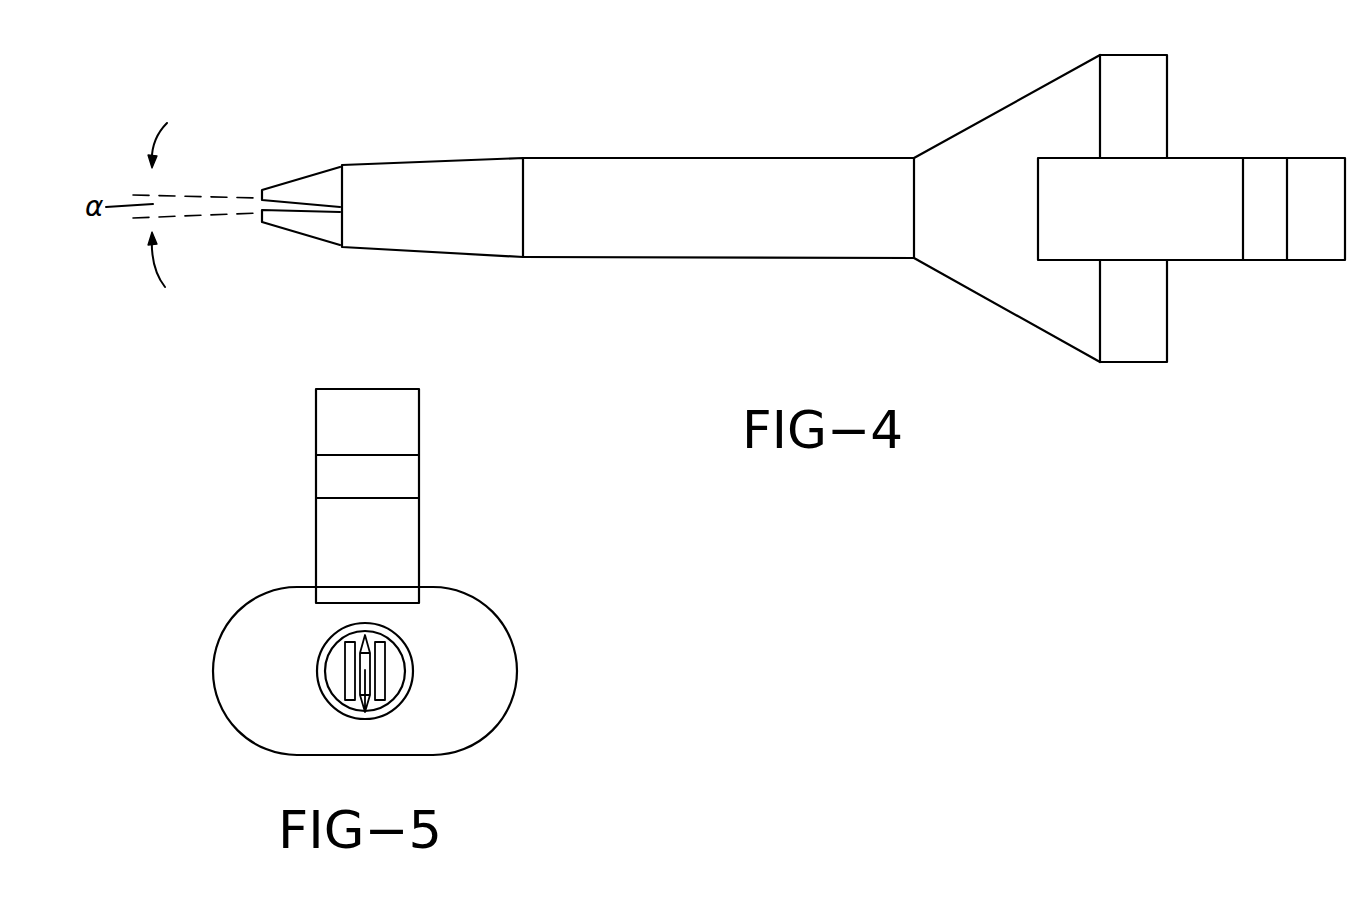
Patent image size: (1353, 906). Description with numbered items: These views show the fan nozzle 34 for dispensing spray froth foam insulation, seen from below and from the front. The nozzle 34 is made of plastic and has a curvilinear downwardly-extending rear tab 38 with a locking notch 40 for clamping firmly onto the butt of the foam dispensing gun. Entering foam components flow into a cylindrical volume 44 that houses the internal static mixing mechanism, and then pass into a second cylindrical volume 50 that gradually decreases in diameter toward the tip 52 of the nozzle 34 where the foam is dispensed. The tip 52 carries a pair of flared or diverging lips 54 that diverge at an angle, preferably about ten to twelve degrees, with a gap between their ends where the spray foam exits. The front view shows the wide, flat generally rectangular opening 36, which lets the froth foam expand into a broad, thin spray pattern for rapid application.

In FIG. 4, the nozzle 34 is at (673, 115).
In FIG. 5, the nozzle 34 is at (460, 565).
In FIG. 5, the rectangular opening 36 is at (365, 707).
In FIG. 4, the rear tab 38 is at (1192, 183).
In FIG. 5, the rear tab 38 is at (357, 545).
In FIG. 4, the locking notch 40 is at (1316, 237).
In FIG. 5, the locking notch 40 is at (353, 416).
In FIG. 4, the cylindrical volume 44 is at (785, 172).
In FIG. 4, the second cylindrical volume 50 is at (430, 172).
In FIG. 5, the tip 52 is at (316, 672).
In FIG. 4, the diverging lips 54 is at (310, 192).
In FIG. 5, the diverging lips 54 is at (378, 650).